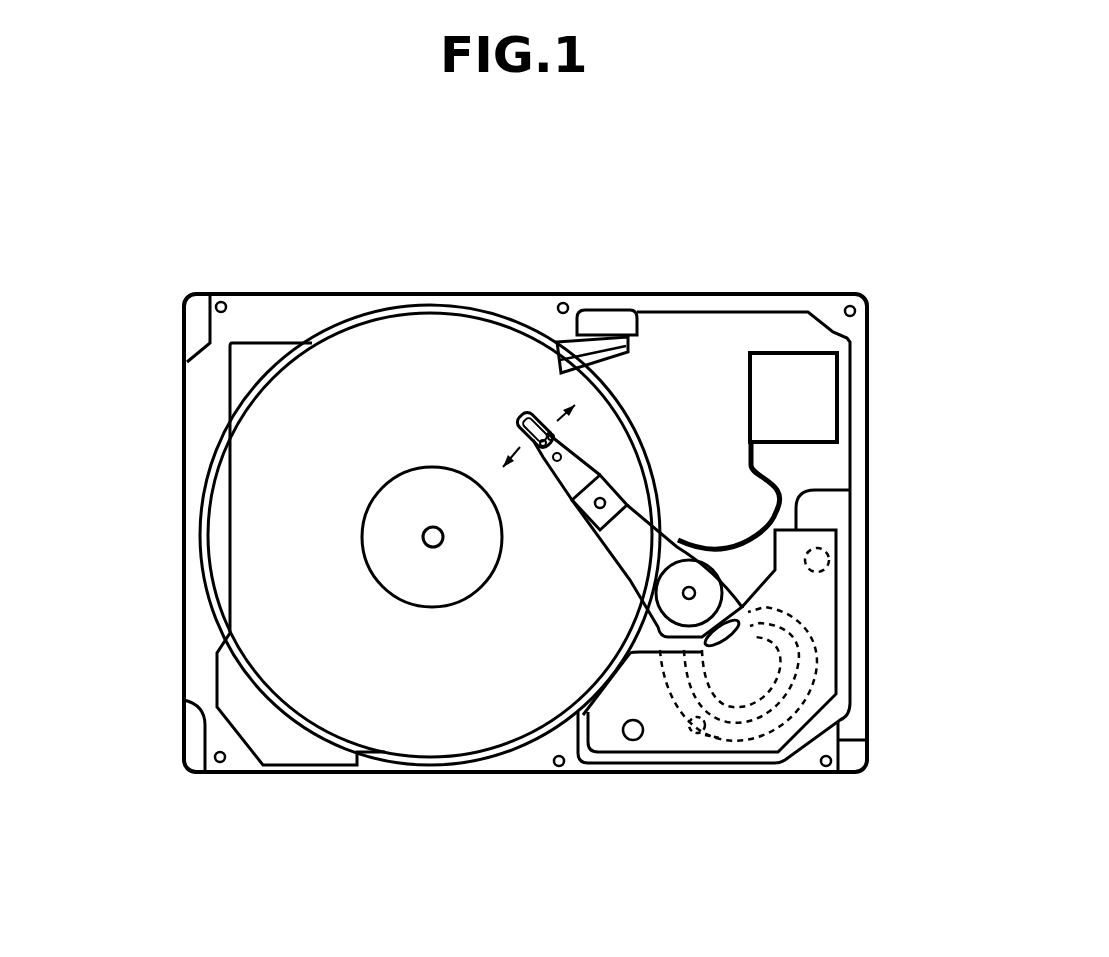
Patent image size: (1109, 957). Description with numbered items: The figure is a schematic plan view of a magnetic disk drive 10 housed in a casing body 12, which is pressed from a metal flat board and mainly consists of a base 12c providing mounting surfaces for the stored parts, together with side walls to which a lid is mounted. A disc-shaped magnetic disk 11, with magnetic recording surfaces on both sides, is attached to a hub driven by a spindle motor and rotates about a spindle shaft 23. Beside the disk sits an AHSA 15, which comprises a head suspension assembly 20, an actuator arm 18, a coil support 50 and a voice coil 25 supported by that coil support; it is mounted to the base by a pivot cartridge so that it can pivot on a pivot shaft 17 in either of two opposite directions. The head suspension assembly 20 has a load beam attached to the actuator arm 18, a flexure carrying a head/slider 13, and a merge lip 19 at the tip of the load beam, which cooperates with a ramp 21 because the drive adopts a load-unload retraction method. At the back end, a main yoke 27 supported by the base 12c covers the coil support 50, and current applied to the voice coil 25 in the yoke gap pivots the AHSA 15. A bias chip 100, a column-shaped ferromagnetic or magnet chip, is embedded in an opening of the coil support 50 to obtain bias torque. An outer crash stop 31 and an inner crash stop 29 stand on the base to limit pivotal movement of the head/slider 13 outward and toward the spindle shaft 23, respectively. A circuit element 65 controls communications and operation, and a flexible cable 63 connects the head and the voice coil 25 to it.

The magnetic disk drive 10 is at (556, 238).
The magnetic disk 11 is at (267, 573).
The casing body 12 is at (645, 294).
The base 12c is at (742, 525).
The head/slider 13 is at (540, 412).
The AHSA 15 is at (622, 478).
The pivot shaft 17 is at (689, 590).
The actuator arm 18 is at (635, 562).
The merge lip 19 is at (527, 421).
The head suspension assembly 20 is at (572, 480).
The ramp 21 is at (612, 347).
The spindle shaft 23 is at (432, 539).
The voice coil 25 is at (800, 615).
The main yoke 27 is at (840, 670).
The inner crash stop 29 is at (824, 553).
The outer crash stop 31 is at (628, 742).
The coil support 50 is at (692, 735).
The flexible cable 63 is at (812, 470).
The circuit element 65 is at (840, 395).
The bias chip 100 is at (713, 736).